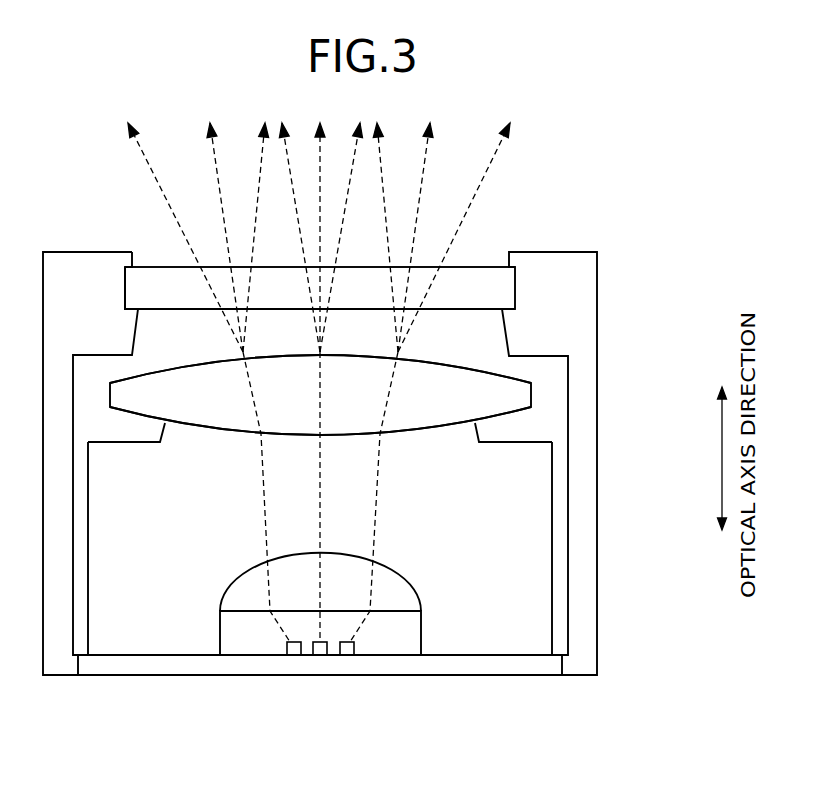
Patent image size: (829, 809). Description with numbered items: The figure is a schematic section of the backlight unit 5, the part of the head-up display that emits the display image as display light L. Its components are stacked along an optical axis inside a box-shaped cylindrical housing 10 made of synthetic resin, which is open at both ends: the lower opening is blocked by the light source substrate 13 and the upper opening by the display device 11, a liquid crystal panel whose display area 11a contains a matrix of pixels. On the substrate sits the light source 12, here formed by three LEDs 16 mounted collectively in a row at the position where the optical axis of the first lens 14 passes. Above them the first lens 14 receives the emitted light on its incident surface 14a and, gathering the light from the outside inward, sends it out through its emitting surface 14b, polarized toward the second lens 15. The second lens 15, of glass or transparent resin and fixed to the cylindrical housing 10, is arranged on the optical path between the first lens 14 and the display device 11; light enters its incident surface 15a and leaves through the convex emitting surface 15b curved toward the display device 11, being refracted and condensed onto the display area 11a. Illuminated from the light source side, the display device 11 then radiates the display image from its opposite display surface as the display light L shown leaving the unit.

The backlight unit 5 is at (613, 185).
The cylindrical housing 10 is at (597, 263).
The display device 11 is at (473, 253).
The display area 11a is at (477, 309).
The light source 12 is at (240, 637).
The light source substrate 13 is at (170, 675).
The first lens 14 is at (425, 579).
The incident surface 14a is at (397, 613).
The emitting surface 14b is at (400, 563).
The second lens 15 is at (542, 377).
The incident surface 15a is at (450, 427).
The emitting surface 15b is at (485, 377).
The LED 16 is at (285, 655).
The display light L is at (155, 181).